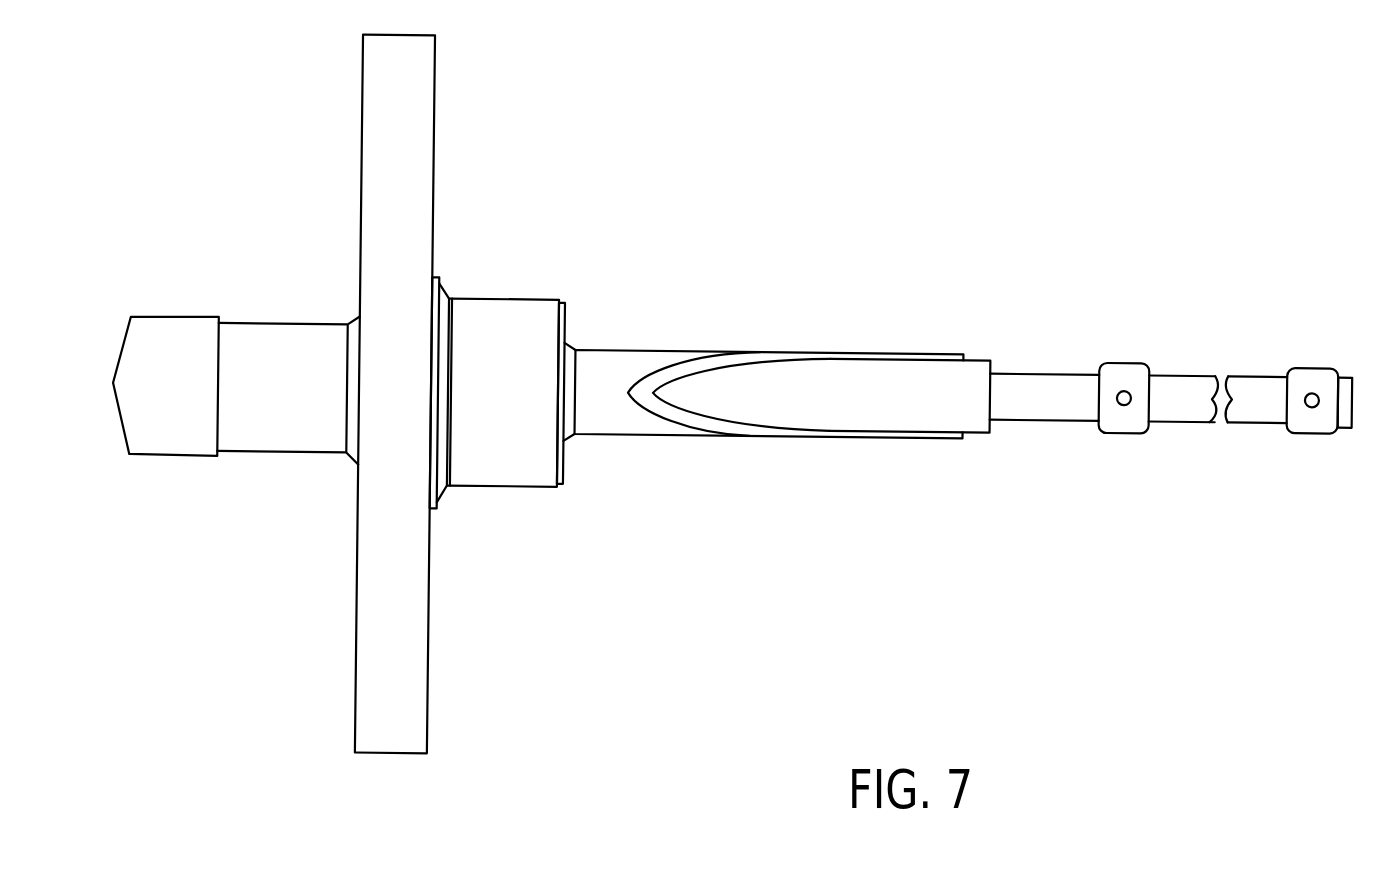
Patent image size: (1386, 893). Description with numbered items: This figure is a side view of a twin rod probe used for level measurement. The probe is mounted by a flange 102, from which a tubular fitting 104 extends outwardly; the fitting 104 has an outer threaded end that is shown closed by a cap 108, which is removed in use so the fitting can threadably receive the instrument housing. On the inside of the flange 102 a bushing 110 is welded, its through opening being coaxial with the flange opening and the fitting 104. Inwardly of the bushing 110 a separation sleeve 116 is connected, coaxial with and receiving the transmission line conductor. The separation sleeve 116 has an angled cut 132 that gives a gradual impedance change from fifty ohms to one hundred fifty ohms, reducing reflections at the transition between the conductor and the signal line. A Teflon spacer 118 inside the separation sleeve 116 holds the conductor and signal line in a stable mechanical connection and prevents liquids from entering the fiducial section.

The flange 102 is at (412, 170).
The tubular fitting 104 is at (277, 339).
The cap 108 is at (172, 340).
The bushing 110 is at (518, 311).
The separation sleeve 116 is at (628, 355).
The Teflon spacer 118 is at (928, 364).
The angled cut 132 is at (773, 349).